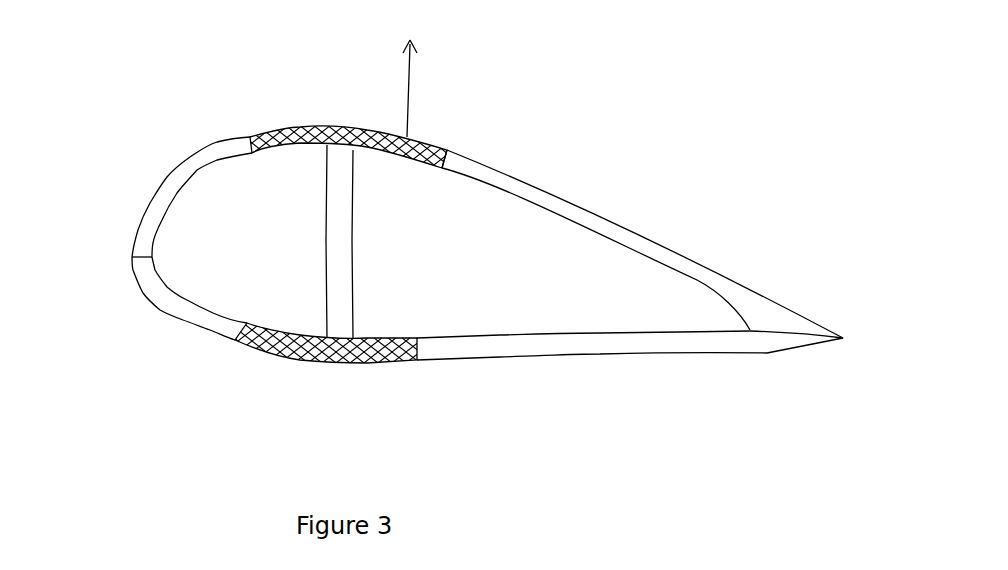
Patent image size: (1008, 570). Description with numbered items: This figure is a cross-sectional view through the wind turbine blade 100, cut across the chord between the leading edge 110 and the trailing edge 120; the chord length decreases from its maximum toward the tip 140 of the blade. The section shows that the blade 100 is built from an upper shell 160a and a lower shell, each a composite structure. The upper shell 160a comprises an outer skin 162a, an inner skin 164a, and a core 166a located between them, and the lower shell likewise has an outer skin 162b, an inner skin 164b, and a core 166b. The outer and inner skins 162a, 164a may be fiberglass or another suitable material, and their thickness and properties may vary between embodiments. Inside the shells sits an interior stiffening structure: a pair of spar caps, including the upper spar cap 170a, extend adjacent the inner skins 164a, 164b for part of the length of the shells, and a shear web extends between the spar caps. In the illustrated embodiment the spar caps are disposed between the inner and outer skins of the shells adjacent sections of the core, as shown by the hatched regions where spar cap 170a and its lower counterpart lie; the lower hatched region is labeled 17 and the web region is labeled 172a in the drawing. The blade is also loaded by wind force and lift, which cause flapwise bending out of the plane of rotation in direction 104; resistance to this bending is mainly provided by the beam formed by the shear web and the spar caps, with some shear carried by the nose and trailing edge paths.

The wind turbine blade 100 is at (619, 81).
The leading edge 110 is at (113, 262).
The trailing edge 120 is at (825, 328).
The tip 140 is at (233, 223).
The direction 104 is at (430, 87).
The upper shell 160a is at (594, 193).
The outer skin 162a is at (623, 230).
The inner skin 164a is at (680, 286).
The core 166a is at (640, 255).
The outer skin 162b is at (640, 357).
The inner skin 164b is at (537, 340).
The core 166b is at (596, 344).
The spar cap 170a is at (300, 128).
The second reinforced region 17 is at (288, 348).
The internal spar 172a is at (337, 287).